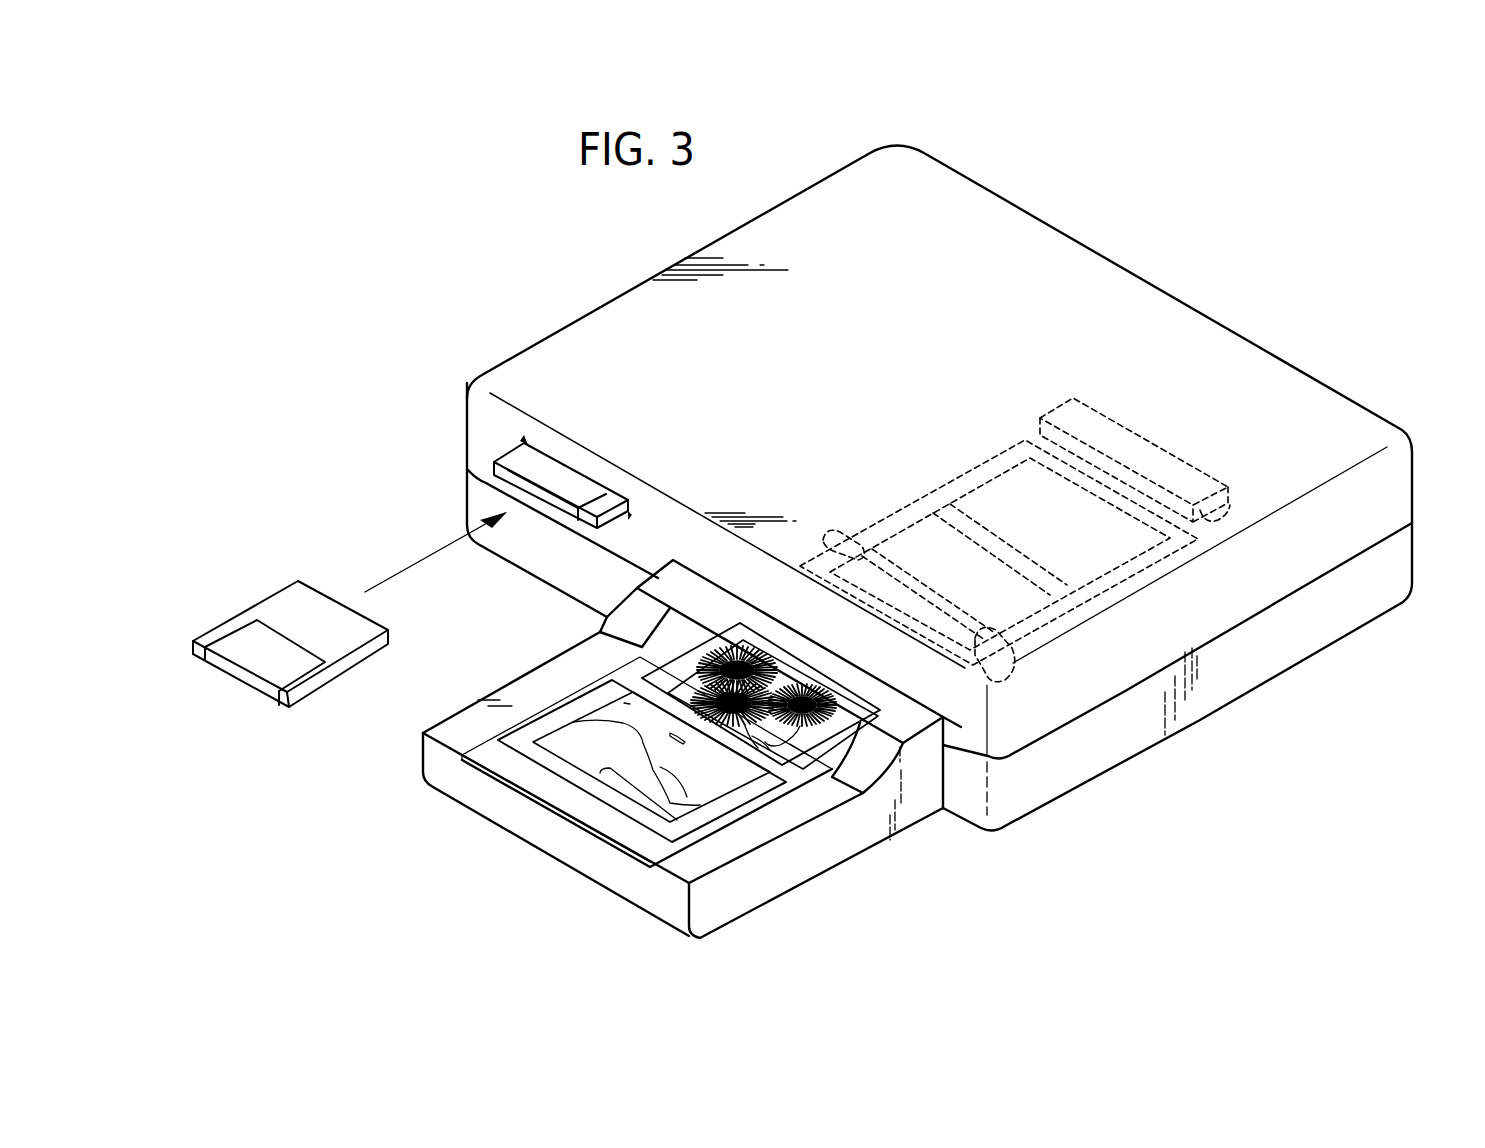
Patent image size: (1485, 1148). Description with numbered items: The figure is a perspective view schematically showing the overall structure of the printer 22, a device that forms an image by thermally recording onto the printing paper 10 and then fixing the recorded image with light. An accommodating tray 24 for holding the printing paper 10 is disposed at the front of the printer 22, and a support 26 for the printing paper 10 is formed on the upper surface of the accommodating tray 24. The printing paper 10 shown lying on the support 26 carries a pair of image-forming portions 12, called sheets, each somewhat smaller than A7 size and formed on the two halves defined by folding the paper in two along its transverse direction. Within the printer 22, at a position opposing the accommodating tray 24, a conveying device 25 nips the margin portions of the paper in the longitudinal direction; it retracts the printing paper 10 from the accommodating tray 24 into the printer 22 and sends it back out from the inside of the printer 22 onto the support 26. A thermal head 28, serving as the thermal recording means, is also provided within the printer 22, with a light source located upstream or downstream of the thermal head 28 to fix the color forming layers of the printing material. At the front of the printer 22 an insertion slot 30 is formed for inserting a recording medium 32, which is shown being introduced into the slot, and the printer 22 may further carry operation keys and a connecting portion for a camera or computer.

The printing paper 10 is at (922, 497).
The image-forming portions (sheets) 12 is at (803, 748).
The printer 22 is at (1220, 307).
The accommodating tray 24 is at (757, 906).
The conveying device 25 is at (1018, 666).
The support 26 is at (600, 813).
The thermal head 28 is at (1150, 438).
The insertion slot 30 is at (577, 470).
The recording medium 32 is at (220, 622).